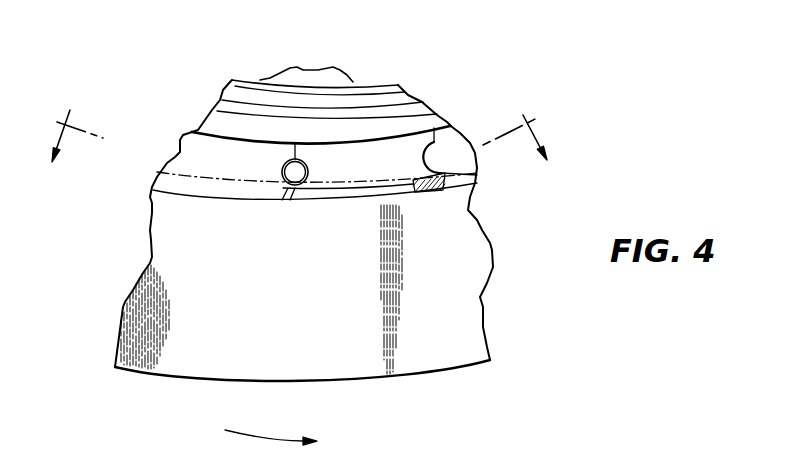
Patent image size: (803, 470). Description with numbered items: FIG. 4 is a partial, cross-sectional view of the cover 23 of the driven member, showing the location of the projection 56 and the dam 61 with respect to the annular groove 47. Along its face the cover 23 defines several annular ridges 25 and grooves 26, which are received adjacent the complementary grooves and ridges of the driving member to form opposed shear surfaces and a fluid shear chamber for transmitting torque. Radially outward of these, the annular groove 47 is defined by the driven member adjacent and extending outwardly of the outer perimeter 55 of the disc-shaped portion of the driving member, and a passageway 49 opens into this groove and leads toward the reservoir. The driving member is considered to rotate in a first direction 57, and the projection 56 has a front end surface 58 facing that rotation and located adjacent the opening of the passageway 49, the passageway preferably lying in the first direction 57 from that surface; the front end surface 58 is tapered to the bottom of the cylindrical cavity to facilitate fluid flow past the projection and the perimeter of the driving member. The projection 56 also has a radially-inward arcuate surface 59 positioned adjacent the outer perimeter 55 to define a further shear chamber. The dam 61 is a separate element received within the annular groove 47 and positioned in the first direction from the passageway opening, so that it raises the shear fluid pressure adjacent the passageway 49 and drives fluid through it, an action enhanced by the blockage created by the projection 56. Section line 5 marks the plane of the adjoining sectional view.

The cover 23 is at (443, 320).
The annular ridges 25 is at (312, 112).
The annular grooves 26 is at (273, 100).
The annular groove 47 is at (180, 157).
The passageway 49 is at (292, 170).
The outer perimeter 55 is at (193, 177).
The projection 56 is at (333, 197).
The first direction 57 is at (273, 440).
The front end surface 58 is at (282, 193).
The radially-inward arcuate surface 59 is at (360, 183).
The dam 61 is at (390, 160).
The section line 5- 5 is at (296, 128).